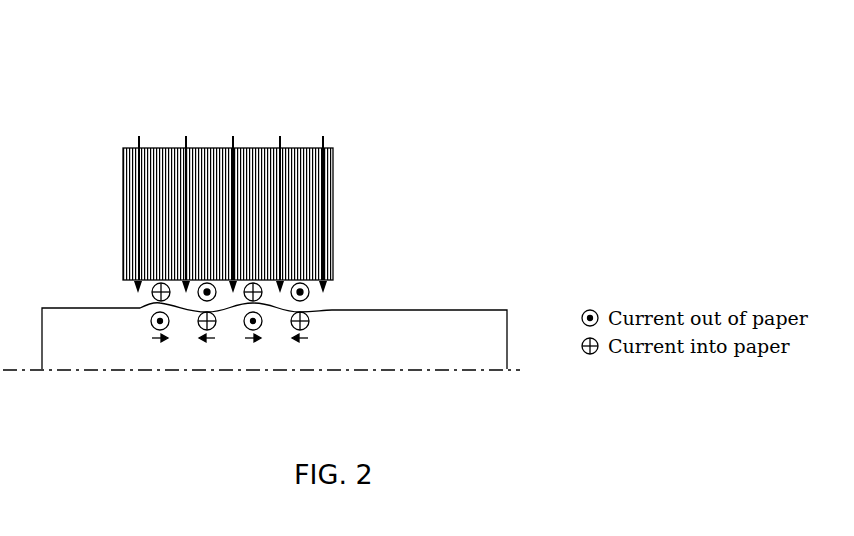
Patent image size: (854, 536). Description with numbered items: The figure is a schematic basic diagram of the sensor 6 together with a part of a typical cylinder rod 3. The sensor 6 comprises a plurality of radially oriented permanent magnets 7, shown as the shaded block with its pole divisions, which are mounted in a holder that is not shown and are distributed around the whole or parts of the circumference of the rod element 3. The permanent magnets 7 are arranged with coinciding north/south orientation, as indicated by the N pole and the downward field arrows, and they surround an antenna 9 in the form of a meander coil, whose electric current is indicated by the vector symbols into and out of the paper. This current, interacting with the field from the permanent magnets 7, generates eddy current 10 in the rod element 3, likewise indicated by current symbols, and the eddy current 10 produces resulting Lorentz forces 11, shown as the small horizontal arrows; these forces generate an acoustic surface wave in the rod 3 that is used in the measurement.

The cylinder rod 3 is at (467, 307).
The sensor 6 is at (120, 132).
The permanent magnets 7 is at (337, 199).
The antenna 9 is at (334, 292).
The eddy current 10 is at (323, 323).
The Lorentz forces 11 is at (323, 341).